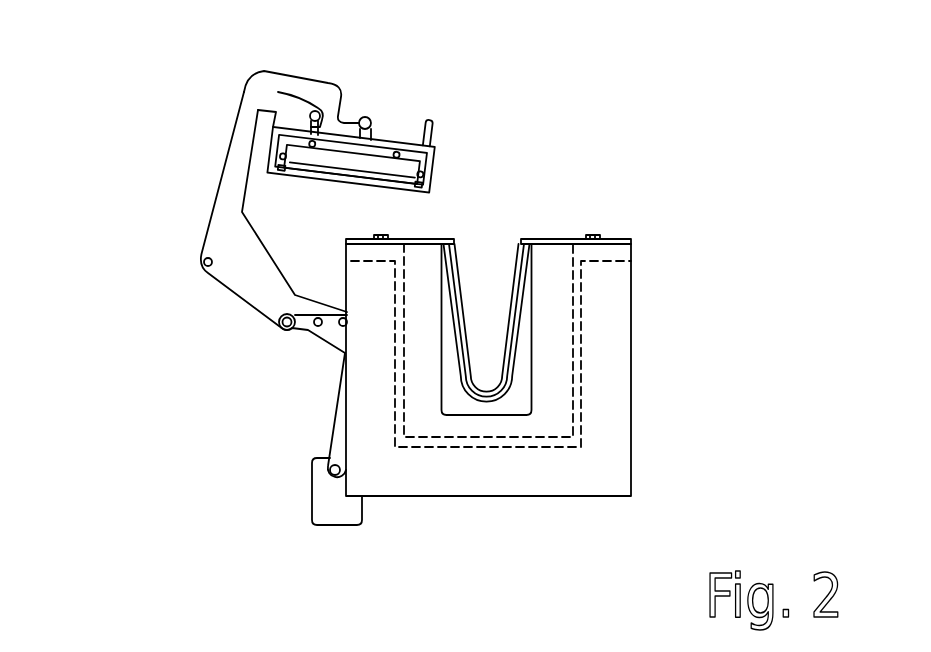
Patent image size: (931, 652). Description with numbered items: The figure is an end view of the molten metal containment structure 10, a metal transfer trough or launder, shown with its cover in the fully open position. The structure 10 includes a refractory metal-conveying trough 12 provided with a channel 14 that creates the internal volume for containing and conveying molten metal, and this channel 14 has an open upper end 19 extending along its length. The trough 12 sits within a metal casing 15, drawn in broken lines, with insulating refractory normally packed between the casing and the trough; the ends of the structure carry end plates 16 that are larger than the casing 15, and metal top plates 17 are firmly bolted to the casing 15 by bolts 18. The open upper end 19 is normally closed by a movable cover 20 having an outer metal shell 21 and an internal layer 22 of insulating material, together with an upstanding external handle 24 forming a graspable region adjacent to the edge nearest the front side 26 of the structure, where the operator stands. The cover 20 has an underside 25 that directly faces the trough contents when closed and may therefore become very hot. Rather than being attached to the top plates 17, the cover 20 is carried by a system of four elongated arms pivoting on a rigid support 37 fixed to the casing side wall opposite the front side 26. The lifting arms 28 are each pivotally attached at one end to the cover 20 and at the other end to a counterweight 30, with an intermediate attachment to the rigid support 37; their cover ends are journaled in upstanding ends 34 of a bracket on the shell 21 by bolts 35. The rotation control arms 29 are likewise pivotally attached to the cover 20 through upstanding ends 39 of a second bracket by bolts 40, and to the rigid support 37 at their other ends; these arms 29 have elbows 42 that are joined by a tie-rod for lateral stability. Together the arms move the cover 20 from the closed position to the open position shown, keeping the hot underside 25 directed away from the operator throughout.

The molten metal containment structure 10 is at (85, 148).
The metal-conveying trough 12 is at (518, 398).
The channel 14 is at (497, 364).
The metal casing 15 is at (582, 406).
The end plates 16 is at (471, 485).
The metal top plates 17 is at (352, 242).
The bolts 18 is at (598, 235).
The open upper end 19 is at (482, 237).
The movable cover 20 is at (388, 140).
The outer metal shell 21 is at (436, 157).
The internal layer of insulating material 22 is at (407, 172).
The upstanding external handle 24 is at (434, 120).
The underside 25 is at (306, 175).
The front side 26 is at (630, 327).
The lifting arms 28 is at (268, 272).
The rotation control arms 29 is at (235, 143).
The counterweight 30 is at (323, 507).
The upstanding ends 34 is at (367, 128).
The bolts 35 is at (362, 117).
The rigid support 37 is at (303, 333).
The upstanding ends 39 is at (340, 97).
The bolts 40 is at (278, 92).
The elbows 42 is at (200, 247).